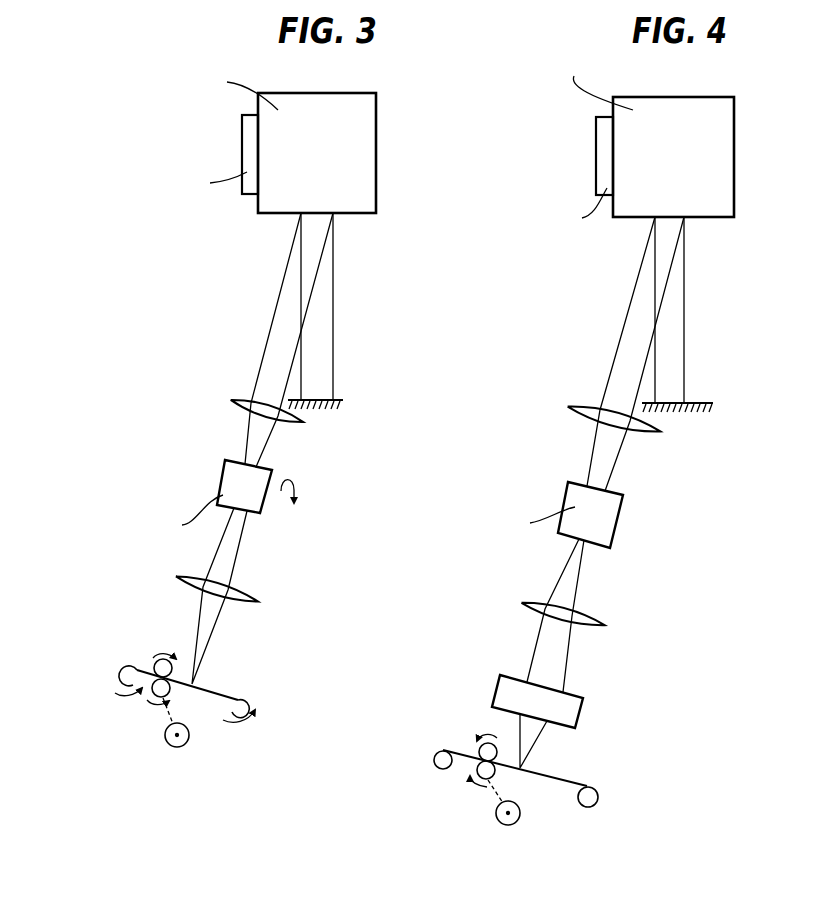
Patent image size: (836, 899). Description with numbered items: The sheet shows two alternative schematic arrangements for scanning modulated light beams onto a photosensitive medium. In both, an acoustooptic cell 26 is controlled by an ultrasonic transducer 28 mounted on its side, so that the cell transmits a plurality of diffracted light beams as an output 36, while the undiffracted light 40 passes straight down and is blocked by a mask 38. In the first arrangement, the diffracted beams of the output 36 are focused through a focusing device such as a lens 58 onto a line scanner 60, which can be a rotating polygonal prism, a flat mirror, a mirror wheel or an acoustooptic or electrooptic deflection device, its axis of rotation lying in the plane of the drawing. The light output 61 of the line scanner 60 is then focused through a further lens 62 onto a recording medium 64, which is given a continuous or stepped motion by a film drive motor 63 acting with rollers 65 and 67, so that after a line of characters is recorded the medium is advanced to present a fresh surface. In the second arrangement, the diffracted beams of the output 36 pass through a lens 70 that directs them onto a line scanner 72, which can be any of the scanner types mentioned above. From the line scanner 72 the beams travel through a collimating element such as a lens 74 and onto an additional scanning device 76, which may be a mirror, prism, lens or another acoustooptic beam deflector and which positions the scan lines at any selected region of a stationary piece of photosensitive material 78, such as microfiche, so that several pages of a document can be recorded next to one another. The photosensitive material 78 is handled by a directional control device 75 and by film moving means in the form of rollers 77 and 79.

In FIG. 3, the acoustooptic cell 26 is at (368, 117).
In FIG. 4, the acoustooptic cell 26 is at (725, 143).
In FIG. 3, the ultrasonic transducer 28 is at (242, 141).
In FIG. 4, the ultrasonic transducer 28 is at (603, 152).
In FIG. 3, the output 36 is at (276, 310).
In FIG. 4, the output 36 is at (630, 317).
In FIG. 3, the undiffracted light 40 is at (327, 316).
In FIG. 4, the undiffracted light 40 is at (677, 312).
In FIG. 3, the mask 38 is at (343, 401).
In FIG. 4, the mask 38 is at (712, 403).
In FIG. 3, the lens 58 is at (250, 401).
In FIG. 3, the line scanner 60 is at (223, 480).
In FIG. 3, the light output 61 is at (240, 544).
In FIG. 3, the lens 62 is at (240, 588).
In FIG. 3, the film drive motor 63 is at (188, 745).
In FIG. 3, the recording medium 64 is at (218, 690).
In FIG. 3, the roller 65 is at (168, 694).
In FIG. 3, the roller 67 is at (155, 663).
In FIG. 4, the lens 70 is at (655, 433).
In FIG. 4, the line scanner 72 is at (620, 522).
In FIG. 4, the lens 74 is at (604, 624).
In FIG. 4, the additional scanning device 76 is at (582, 705).
In FIG. 4, the roller 77 is at (495, 773).
In FIG. 4, the photosensitive material 78 is at (582, 788).
In FIG. 4, the roller 79 is at (478, 748).
In FIG. 4, the directional control device 75 is at (515, 825).